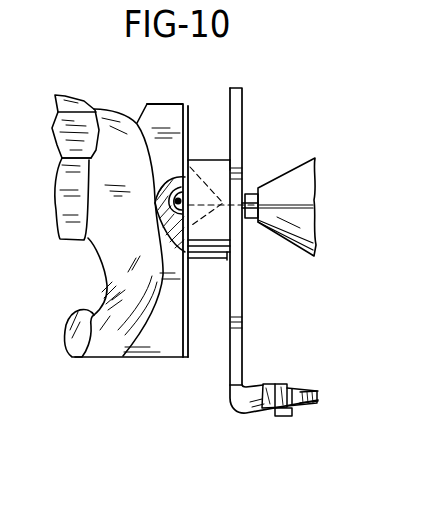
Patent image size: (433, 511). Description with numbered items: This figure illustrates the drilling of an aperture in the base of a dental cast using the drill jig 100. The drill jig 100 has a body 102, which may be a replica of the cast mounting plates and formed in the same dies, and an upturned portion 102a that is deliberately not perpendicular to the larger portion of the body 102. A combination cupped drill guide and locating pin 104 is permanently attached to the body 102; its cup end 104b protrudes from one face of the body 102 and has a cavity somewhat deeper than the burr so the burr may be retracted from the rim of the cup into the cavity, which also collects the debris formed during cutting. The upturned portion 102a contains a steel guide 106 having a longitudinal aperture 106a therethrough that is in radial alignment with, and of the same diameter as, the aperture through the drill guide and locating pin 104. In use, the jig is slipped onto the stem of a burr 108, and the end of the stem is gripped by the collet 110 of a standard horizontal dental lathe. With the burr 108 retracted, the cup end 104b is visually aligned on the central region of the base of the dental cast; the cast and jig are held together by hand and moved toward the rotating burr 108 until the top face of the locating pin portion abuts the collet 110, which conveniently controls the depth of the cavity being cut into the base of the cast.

The drill jig 100 is at (297, 320).
The body 102 is at (244, 122).
The upturned portion 102a is at (303, 408).
The combination cupped drill guide and locating pin 104 is at (205, 262).
The cup end 104b is at (203, 160).
The steel guide 106 is at (293, 385).
The longitudinal aperture 106a is at (284, 417).
The burr 108 is at (155, 203).
The collet 110 is at (288, 170).